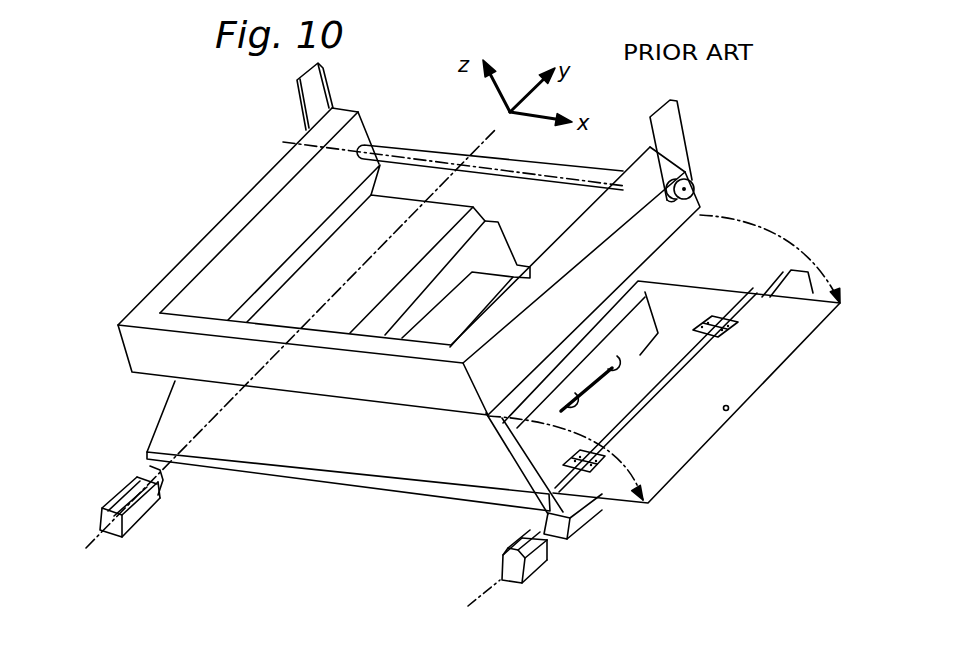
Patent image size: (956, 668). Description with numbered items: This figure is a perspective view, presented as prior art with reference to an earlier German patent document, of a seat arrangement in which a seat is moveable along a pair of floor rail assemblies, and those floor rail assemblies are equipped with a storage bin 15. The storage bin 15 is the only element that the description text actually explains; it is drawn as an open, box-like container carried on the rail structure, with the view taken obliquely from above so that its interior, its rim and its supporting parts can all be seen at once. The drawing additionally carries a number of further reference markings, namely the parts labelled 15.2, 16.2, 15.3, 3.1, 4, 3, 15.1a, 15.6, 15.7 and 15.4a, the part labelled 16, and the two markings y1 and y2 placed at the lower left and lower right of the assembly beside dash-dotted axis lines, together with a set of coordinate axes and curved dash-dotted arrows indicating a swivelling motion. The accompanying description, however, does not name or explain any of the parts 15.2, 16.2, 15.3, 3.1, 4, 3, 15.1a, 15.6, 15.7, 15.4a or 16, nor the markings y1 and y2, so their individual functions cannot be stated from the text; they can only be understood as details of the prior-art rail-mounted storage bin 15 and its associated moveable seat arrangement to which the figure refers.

The storage bin 15 is at (198, 123).
The support plate 15.2 is at (165, 184).
The guide groove 16.2 is at (165, 231).
The transverse rod 15.3 is at (438, 123).
The frame rim 3.1 is at (175, 278).
The roller bracket 4 is at (774, 149).
The pivot drive 3 is at (775, 204).
The support strut 15.1a is at (108, 428).
The guide rail 15.6 is at (648, 367).
The locating hole 15.7 is at (846, 407).
The clamping bracket 15.4a is at (826, 457).
The base plate 16 is at (742, 496).
The guide block y1 is at (276, 354).
The guide block y2 is at (494, 568).